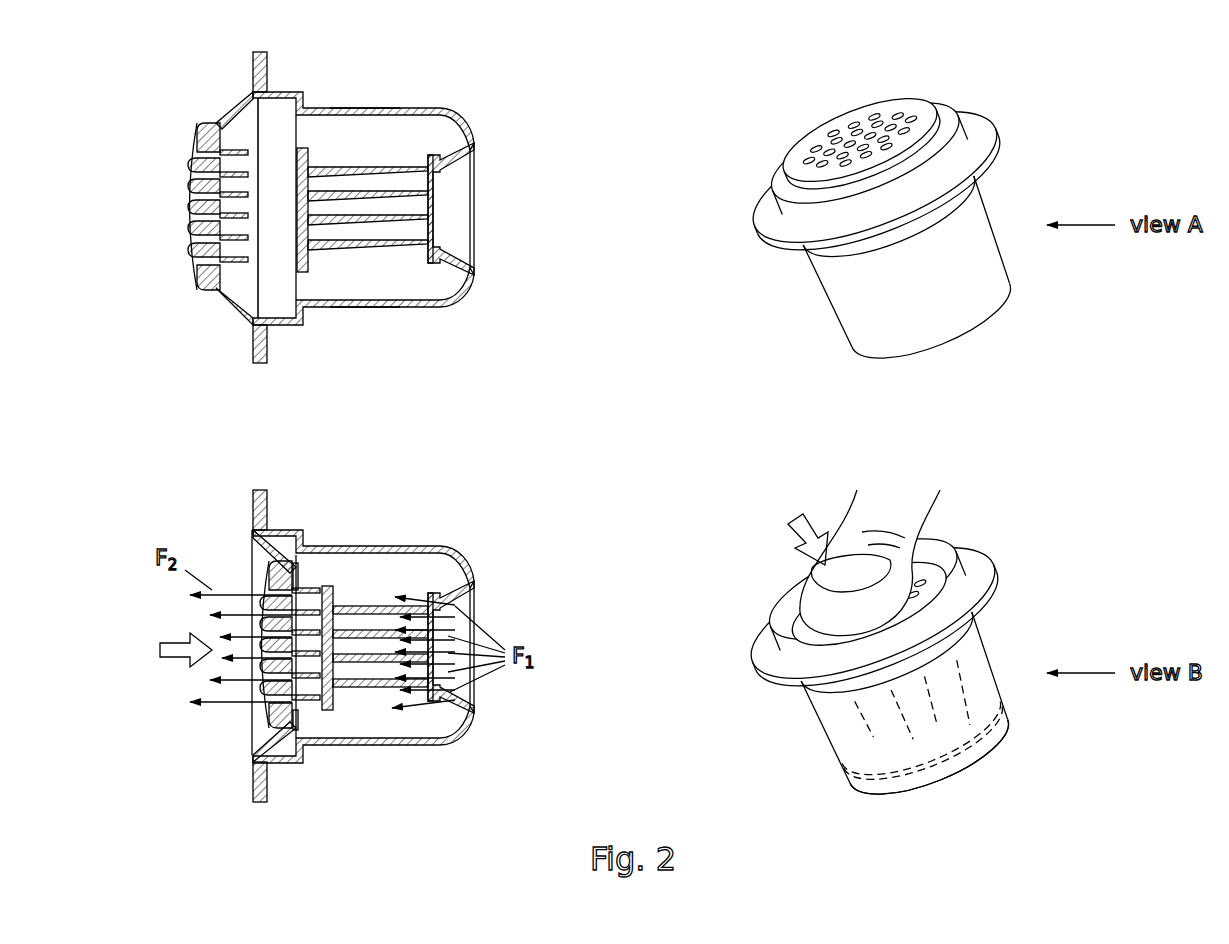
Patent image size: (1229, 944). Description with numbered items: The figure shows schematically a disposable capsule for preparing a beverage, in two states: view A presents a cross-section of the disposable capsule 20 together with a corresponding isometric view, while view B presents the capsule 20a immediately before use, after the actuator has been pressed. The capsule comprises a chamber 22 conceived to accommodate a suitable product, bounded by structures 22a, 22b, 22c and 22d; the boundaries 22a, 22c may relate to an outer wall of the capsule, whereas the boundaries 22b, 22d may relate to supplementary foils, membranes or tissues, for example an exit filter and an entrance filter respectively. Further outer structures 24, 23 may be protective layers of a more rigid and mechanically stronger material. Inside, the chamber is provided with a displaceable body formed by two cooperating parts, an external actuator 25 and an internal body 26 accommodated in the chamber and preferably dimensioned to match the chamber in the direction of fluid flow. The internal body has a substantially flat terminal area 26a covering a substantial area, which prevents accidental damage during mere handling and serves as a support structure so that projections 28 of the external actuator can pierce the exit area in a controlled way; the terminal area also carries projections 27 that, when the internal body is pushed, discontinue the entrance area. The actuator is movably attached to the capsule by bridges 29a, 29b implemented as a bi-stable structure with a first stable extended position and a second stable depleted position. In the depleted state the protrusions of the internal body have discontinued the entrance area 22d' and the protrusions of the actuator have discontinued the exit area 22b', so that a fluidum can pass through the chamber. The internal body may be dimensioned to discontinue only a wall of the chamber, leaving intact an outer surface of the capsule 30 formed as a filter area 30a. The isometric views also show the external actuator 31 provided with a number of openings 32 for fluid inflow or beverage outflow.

The disposable capsule 20 is at (163, 103).
The disposable capsule 20a is at (163, 743).
The chamber 22 is at (350, 275).
The boundary structure 22a is at (360, 110).
The exit area 22b is at (206, 228).
The exit area 22b' is at (303, 529).
The boundary structure 22c is at (400, 307).
The entrance area 22d is at (489, 209).
The entrance area 22d' is at (745, 635).
The outer structure 23 is at (257, 120).
The outer structure 24 is at (474, 170).
The external actuator 25 is at (186, 197).
The internal body 26 is at (304, 150).
The terminal area 26a is at (297, 172).
The projections 27 is at (393, 170).
The projections 28 is at (248, 268).
The bridge 29a is at (250, 97).
The bridge 29b is at (245, 320).
The outer surface of the capsule 30 is at (862, 305).
The filter area 30a is at (970, 770).
The external actuator 31 is at (906, 100).
The openings 32 is at (808, 148).